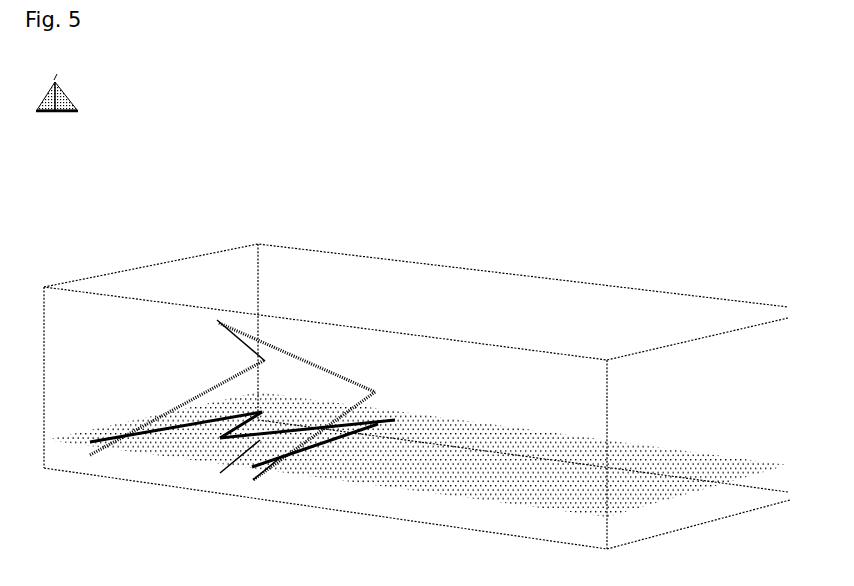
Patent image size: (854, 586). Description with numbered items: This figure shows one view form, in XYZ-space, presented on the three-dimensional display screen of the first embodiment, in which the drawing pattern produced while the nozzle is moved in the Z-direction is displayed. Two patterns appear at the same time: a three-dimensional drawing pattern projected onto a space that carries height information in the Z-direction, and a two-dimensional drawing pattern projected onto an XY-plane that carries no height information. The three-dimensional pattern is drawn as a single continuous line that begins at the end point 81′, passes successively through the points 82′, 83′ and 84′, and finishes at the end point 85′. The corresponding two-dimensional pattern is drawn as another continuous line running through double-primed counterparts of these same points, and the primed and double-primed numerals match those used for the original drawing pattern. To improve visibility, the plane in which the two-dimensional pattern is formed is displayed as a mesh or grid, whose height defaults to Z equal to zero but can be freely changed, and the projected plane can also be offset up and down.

The end point 81′ is at (91, 455).
The point 82′ is at (268, 360).
The point 83′ is at (217, 320).
The point 84′ is at (375, 391).
The end point 85′ is at (282, 456).